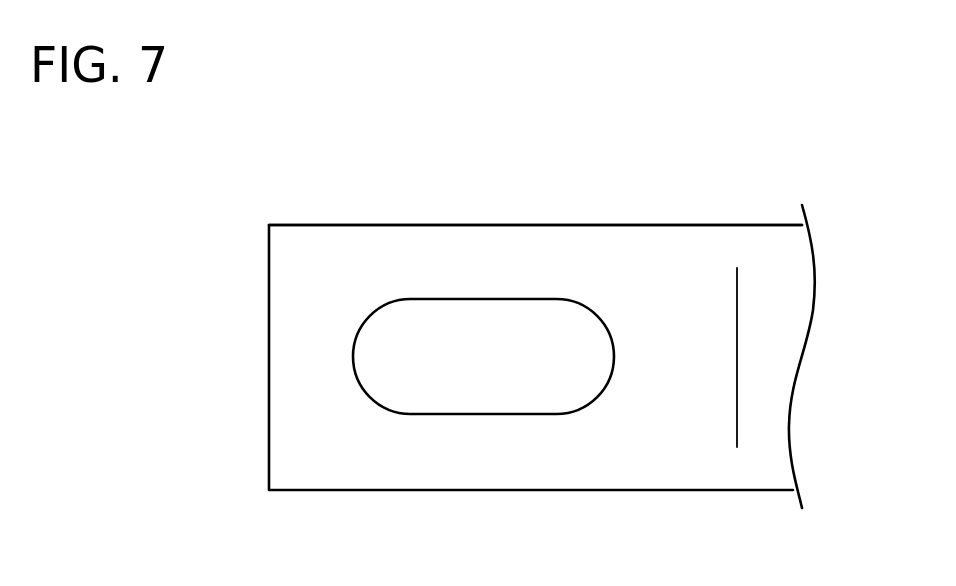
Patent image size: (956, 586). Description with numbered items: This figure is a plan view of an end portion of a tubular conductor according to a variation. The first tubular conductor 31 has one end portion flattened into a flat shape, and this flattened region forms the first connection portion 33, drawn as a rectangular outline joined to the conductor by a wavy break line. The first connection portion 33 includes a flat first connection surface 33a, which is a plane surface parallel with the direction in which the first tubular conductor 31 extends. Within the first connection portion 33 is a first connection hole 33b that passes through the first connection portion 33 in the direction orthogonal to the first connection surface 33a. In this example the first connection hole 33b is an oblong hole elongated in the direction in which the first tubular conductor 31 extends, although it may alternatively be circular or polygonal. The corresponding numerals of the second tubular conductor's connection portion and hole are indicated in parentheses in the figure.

The first connection portion 33 is at (312, 490).
The first connection surface 33a is at (332, 242).
The first connection hole 33b is at (455, 414).
The first tubular conductor 31 is at (760, 490).